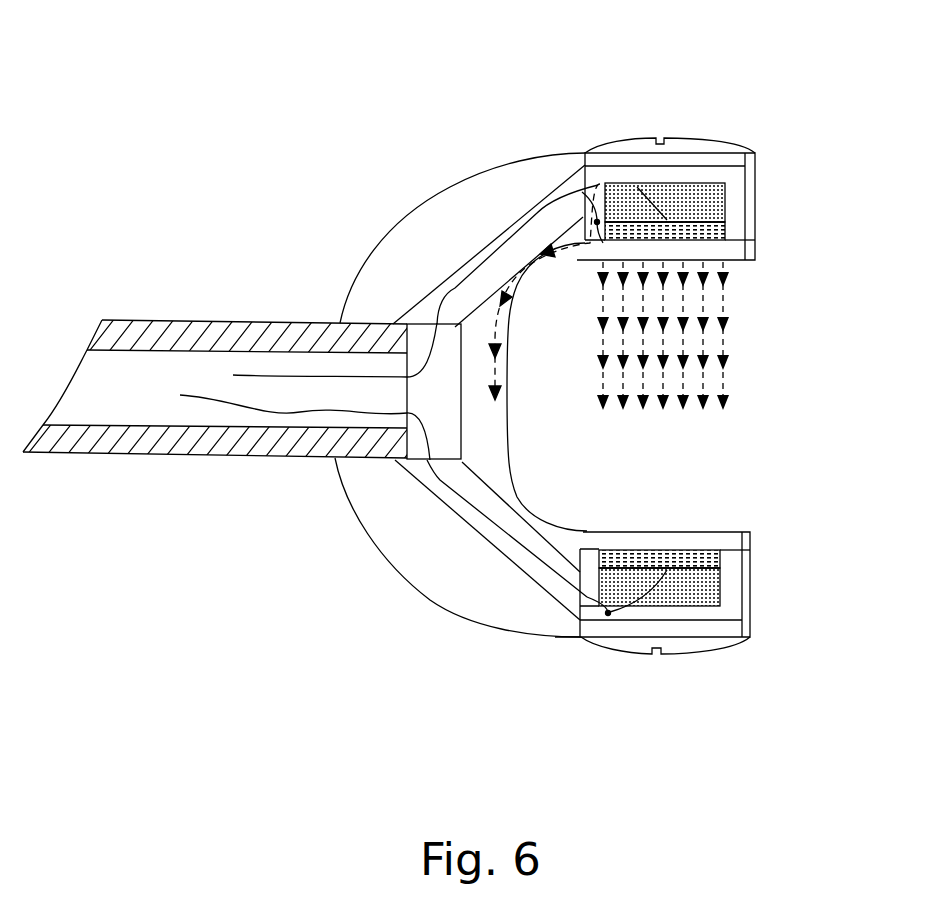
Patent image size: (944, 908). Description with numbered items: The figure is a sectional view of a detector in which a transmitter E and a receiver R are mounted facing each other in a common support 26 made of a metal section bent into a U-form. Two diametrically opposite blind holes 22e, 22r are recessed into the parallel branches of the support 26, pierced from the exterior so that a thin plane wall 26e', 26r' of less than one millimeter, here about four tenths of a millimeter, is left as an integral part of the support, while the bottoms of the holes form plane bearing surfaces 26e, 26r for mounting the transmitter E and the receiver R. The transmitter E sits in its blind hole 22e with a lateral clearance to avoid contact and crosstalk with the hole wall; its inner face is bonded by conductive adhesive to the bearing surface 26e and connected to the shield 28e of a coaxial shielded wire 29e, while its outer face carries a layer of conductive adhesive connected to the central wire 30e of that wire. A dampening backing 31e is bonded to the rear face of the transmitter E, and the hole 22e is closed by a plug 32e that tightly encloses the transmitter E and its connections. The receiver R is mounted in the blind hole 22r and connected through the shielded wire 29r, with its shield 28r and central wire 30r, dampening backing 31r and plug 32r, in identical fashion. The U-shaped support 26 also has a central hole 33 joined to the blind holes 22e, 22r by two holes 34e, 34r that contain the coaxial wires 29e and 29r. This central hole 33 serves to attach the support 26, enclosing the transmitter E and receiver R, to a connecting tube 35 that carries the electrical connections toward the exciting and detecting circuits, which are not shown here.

The common support 26 is at (415, 230).
The connecting tube 35 is at (128, 330).
The coaxial shielded wire 29e is at (233, 375).
The coaxial shielded wire 29r is at (180, 395).
The central hole 33 is at (430, 440).
The hole 34e is at (553, 197).
The hole 34r is at (547, 592).
The shield 28e is at (572, 245).
The shield 28r is at (587, 602).
The blind hole 22e is at (738, 212).
The blind hole 22r is at (733, 580).
The plug 32e is at (685, 143).
The plug 32r is at (672, 655).
The dampening backing 31e is at (708, 188).
The dampening backing 31r is at (700, 605).
The central wire 30e is at (598, 185).
The central wire 30r is at (608, 613).
The plane bearing surface 26e is at (739, 213).
The plane wall 26e' is at (805, 263).
The plane bearing surface 26r is at (798, 573).
The plane wall 26r' is at (668, 496).
The transmitter E is at (727, 242).
The receiver R is at (735, 552).